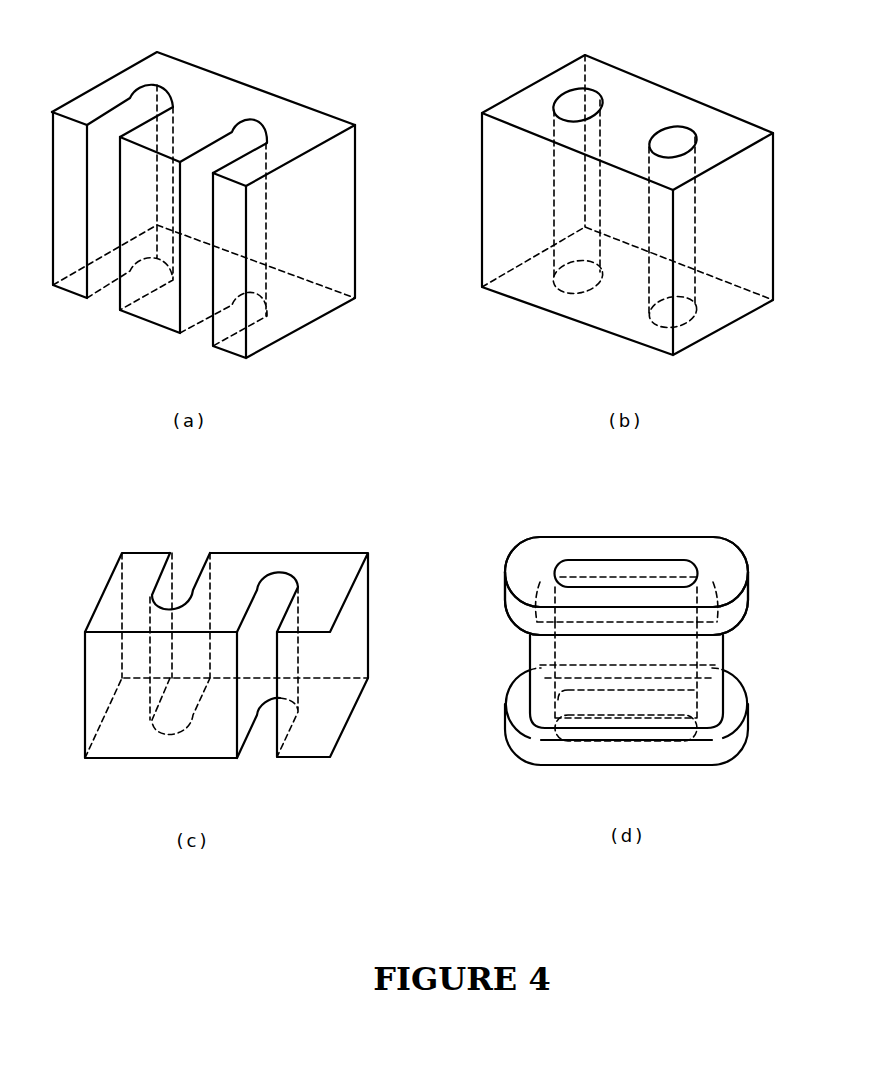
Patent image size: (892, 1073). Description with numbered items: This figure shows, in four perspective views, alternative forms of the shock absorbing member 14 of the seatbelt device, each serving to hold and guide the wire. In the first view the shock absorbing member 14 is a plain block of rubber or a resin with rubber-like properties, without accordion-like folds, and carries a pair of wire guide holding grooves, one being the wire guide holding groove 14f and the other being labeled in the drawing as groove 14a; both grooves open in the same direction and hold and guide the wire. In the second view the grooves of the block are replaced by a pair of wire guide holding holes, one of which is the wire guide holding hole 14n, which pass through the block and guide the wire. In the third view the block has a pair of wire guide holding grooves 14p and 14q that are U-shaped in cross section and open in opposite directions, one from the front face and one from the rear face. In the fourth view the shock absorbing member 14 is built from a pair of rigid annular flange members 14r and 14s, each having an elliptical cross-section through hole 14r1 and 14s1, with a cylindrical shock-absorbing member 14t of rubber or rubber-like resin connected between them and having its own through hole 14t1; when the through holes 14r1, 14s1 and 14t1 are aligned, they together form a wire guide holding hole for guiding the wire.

The shock absorbing member 14 is at (244, 68).
The wire guide holding groove 14f is at (128, 108).
The second slot in block 14a is at (262, 143).
The wire guide holding hole 14n is at (678, 143).
The wire guide holding groove 14q is at (193, 585).
The wire guide holding groove 14p is at (283, 582).
The annular flange member 14r is at (553, 553).
The through hole 14r1 is at (677, 567).
The cylindrical shock-absorbing member 14t is at (543, 661).
The through hole 14t1 is at (693, 662).
The annular flange member 14s is at (527, 750).
The through hole 14s1 is at (627, 742).